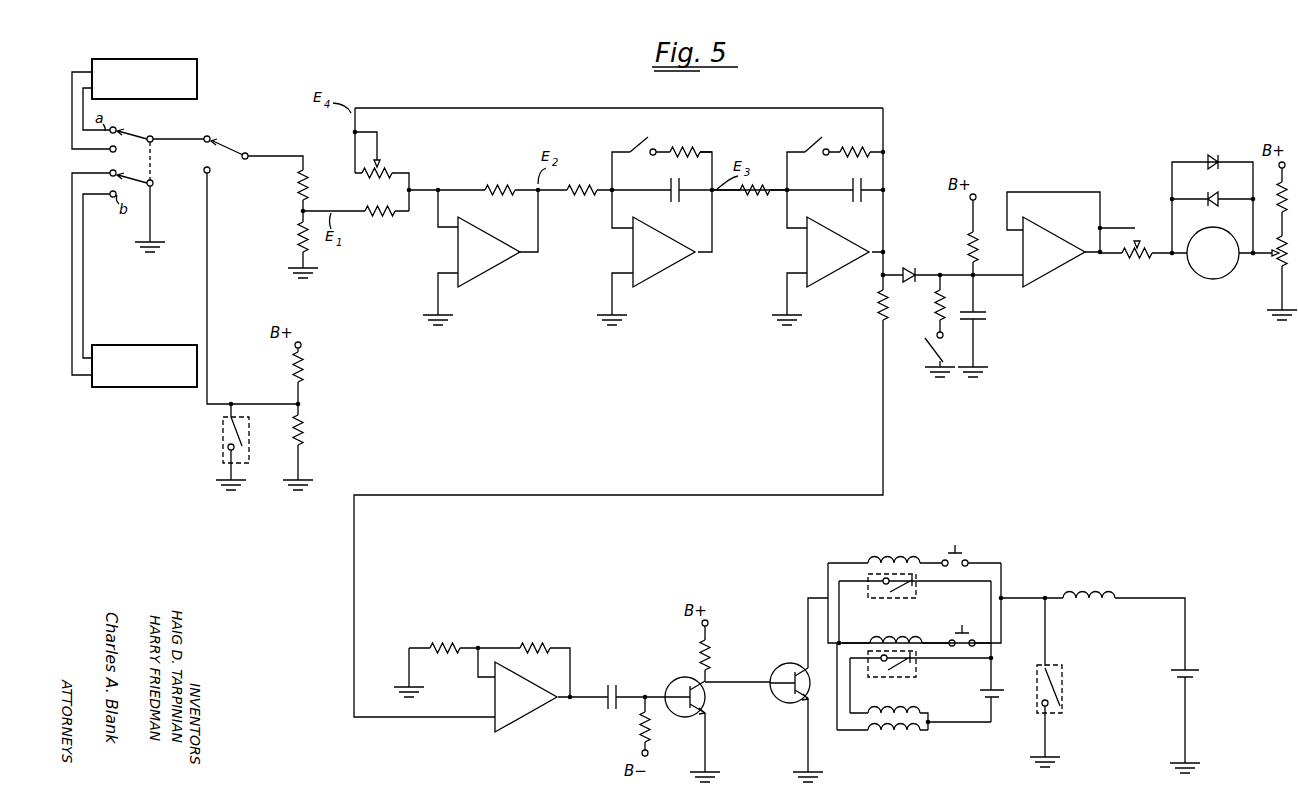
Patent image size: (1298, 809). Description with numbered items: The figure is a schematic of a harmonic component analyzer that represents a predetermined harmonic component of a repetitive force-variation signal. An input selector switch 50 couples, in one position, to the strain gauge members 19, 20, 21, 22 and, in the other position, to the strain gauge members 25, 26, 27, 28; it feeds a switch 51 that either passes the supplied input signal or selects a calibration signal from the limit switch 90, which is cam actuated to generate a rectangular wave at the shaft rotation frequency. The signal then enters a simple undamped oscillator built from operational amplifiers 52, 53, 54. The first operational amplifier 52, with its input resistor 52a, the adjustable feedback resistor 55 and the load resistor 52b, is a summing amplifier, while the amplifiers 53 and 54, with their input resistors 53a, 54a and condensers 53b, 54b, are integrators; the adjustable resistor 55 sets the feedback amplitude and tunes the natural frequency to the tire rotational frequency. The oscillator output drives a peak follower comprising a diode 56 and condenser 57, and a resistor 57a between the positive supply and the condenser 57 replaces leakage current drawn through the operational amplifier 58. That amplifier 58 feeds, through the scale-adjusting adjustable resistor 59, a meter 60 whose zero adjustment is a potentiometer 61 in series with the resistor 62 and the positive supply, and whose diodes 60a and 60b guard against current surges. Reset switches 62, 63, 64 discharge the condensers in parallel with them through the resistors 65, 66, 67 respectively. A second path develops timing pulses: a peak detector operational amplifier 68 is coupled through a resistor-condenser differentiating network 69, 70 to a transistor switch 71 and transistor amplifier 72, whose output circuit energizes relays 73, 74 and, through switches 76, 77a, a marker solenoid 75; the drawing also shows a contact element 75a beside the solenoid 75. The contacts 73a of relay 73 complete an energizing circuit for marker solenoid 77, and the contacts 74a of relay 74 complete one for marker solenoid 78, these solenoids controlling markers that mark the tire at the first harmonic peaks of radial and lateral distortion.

The strain gauge member 19 is at (99, 58).
The strain gauge member 20 is at (144, 79).
The strain gauge member 21 is at (144, 79).
The strain gauge member 22 is at (144, 79).
The strain gauge member 25 is at (97, 397).
The strain gauge member 26 is at (144, 366).
The strain gauge member 27 is at (144, 366).
The strain gauge member 28 is at (144, 366).
The input selector switch 50 is at (143, 137).
The switch 51 is at (236, 143).
The first operational amplifier 52 is at (496, 274).
The input resistor 52a is at (383, 217).
The load resistor 52b is at (502, 198).
The operational amplifier 53 is at (663, 272).
The input resistor 53a is at (577, 199).
The condenser 53b is at (680, 202).
The operational amplifier 54 is at (823, 277).
The input resistor 54a is at (754, 196).
The condenser 54b is at (862, 202).
The adjustable resistor 55 is at (394, 164).
The diode 56 is at (906, 266).
The condenser 57 is at (985, 323).
The resistor 57a is at (978, 246).
The operational amplifier 58 is at (1046, 277).
The adjustable resistor 59 is at (1138, 271).
The meter 60 is at (1202, 279).
The diode 60a is at (1212, 158).
The diode 60b is at (1216, 203).
The potentiometer 61 is at (1276, 263).
The reset switch 62 is at (638, 141).
The reset switch 63 is at (812, 143).
The reset switch 64 is at (924, 348).
The resistor 65 is at (691, 144).
The resistor 66 is at (850, 145).
The resistor 67 is at (934, 306).
The operational amplifier 68 is at (516, 723).
The resistor 69 is at (638, 732).
The condenser 70 is at (612, 684).
The transistor switch 71 is at (706, 704).
The transistor amplifier 72 is at (785, 665).
The relay 73 is at (889, 560).
The contacts 73a is at (916, 591).
The relay 74 is at (886, 631).
The contacts 74a is at (905, 682).
The marker solenoid 75 is at (1087, 596).
The relay contact 75a is at (1057, 664).
The switch 76 is at (973, 554).
The marker solenoid 77 is at (888, 736).
The switch 77a is at (948, 640).
The marker solenoid 78 is at (879, 703).
The limit switch 90 is at (248, 435).